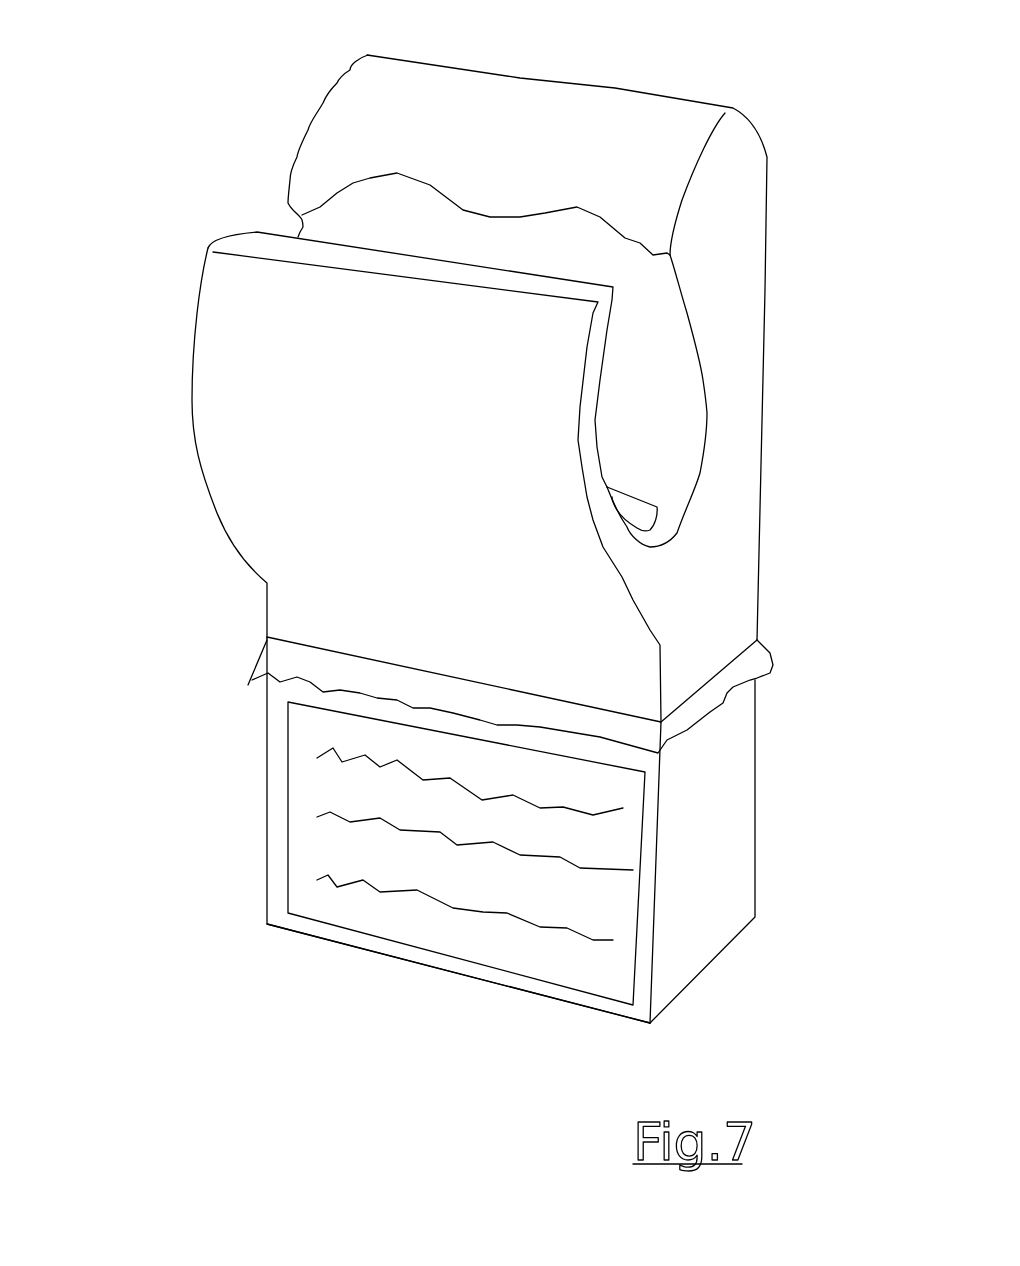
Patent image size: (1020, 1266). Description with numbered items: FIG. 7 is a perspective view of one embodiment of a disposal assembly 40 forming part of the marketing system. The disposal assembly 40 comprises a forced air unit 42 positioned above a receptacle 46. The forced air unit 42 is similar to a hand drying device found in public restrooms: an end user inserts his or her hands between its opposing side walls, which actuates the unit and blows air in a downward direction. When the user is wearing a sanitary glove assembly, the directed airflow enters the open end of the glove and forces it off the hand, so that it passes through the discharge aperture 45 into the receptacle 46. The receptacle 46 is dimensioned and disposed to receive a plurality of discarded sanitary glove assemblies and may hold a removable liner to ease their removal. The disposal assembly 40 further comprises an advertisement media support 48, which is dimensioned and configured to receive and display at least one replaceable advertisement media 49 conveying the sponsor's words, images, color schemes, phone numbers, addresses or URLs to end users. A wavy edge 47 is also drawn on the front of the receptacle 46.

The disposal assembly 40 is at (108, 178).
The forced air unit 42 is at (613, 88).
The discharge aperture 45 is at (637, 518).
The receptacle 46 is at (262, 810).
The tear line 47 is at (257, 653).
The advertisement media support 48 is at (543, 998).
The replaceable advertisement media 49 is at (610, 890).